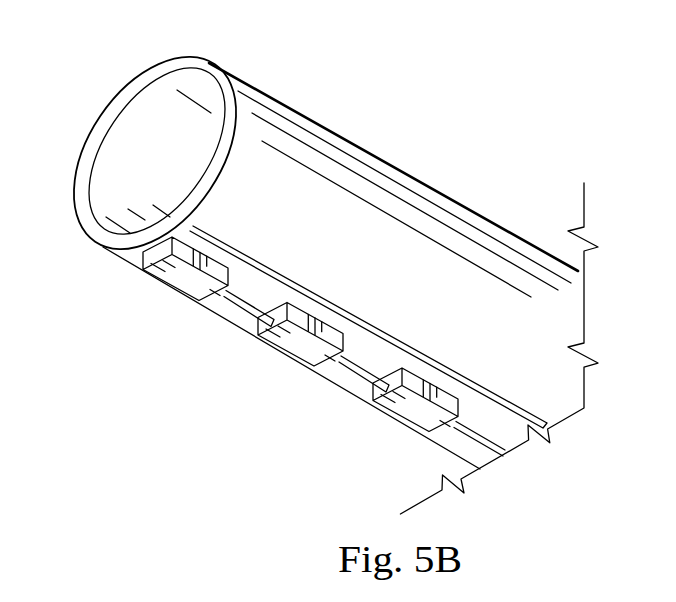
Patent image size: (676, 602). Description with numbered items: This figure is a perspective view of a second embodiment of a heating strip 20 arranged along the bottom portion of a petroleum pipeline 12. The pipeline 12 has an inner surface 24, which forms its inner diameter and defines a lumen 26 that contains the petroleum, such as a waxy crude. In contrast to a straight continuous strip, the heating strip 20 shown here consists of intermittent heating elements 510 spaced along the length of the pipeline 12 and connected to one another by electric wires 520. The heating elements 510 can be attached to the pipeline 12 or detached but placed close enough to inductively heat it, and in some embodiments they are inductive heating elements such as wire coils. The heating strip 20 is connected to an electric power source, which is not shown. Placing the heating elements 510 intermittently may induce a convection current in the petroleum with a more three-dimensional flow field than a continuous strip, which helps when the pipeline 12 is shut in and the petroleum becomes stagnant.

The petroleum pipeline 12 is at (398, 165).
The heating strip 20 is at (369, 327).
The inner surface 24 is at (128, 150).
The lumen 26 is at (187, 84).
The intermittent heating elements 510 is at (185, 275).
The electric wires 520 is at (246, 313).